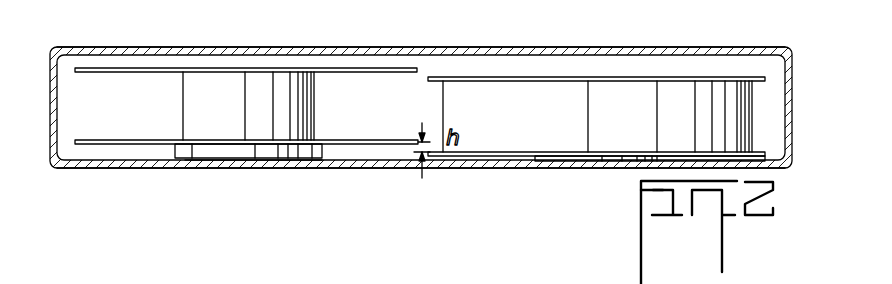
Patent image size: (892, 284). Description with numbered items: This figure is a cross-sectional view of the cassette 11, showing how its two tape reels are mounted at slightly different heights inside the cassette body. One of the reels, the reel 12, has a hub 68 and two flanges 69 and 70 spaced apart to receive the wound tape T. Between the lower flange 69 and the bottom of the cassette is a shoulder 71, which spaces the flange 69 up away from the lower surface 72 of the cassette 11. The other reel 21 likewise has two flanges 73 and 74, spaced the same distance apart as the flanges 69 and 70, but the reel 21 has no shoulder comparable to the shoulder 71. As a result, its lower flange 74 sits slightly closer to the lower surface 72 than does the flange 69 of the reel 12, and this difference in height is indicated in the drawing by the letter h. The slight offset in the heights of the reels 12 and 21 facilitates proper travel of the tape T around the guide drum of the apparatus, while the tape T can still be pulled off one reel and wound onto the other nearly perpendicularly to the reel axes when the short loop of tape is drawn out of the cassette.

The cassette 11 is at (526, 44).
The reel 12 is at (202, 58).
The other reel 21 is at (633, 84).
The hub 68 is at (246, 113).
The flange 69 is at (355, 140).
The flange 70 is at (330, 73).
The shoulder 71 is at (192, 151).
The lower surface 72 is at (370, 158).
The flange 73 is at (763, 82).
The flange 74 is at (760, 153).
The tape T is at (572, 97).